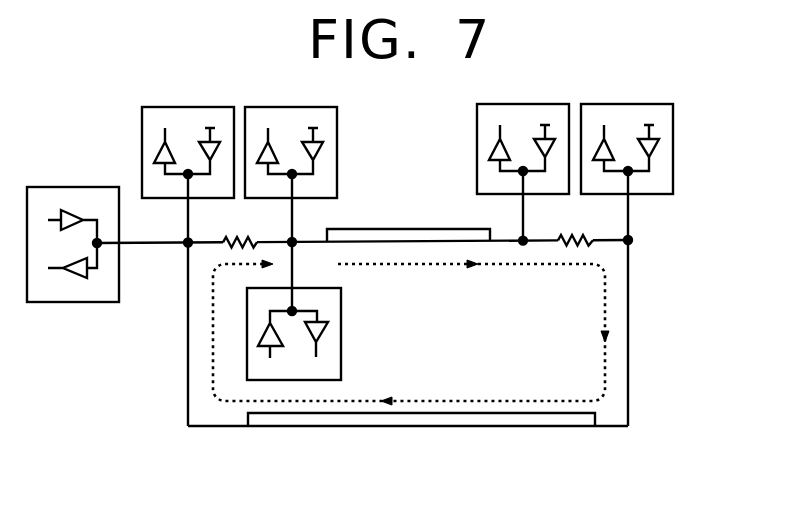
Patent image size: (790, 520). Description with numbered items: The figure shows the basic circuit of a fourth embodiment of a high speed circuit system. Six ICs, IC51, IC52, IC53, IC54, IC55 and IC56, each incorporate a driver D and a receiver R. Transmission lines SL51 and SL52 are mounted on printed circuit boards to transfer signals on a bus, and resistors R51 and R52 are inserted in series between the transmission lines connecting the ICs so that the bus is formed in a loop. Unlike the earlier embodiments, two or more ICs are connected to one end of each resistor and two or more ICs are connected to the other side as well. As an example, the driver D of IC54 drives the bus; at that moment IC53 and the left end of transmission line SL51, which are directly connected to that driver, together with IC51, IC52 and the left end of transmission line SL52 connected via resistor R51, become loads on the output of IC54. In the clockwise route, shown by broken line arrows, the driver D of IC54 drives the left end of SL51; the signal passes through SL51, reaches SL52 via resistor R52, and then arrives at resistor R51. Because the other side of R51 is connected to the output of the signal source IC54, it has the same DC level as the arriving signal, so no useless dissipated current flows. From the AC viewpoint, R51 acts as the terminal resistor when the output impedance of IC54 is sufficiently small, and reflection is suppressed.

The IC IC51 is at (72, 303).
The IC IC52 is at (142, 120).
The IC IC53 is at (339, 150).
The IC IC54 is at (341, 308).
The IC IC55 is at (477, 118).
The IC IC56 is at (674, 123).
The resistor R51 is at (240, 228).
The resistor R52 is at (575, 225).
The transmission line SL51 is at (408, 221).
The transmission line SL52 is at (421, 433).